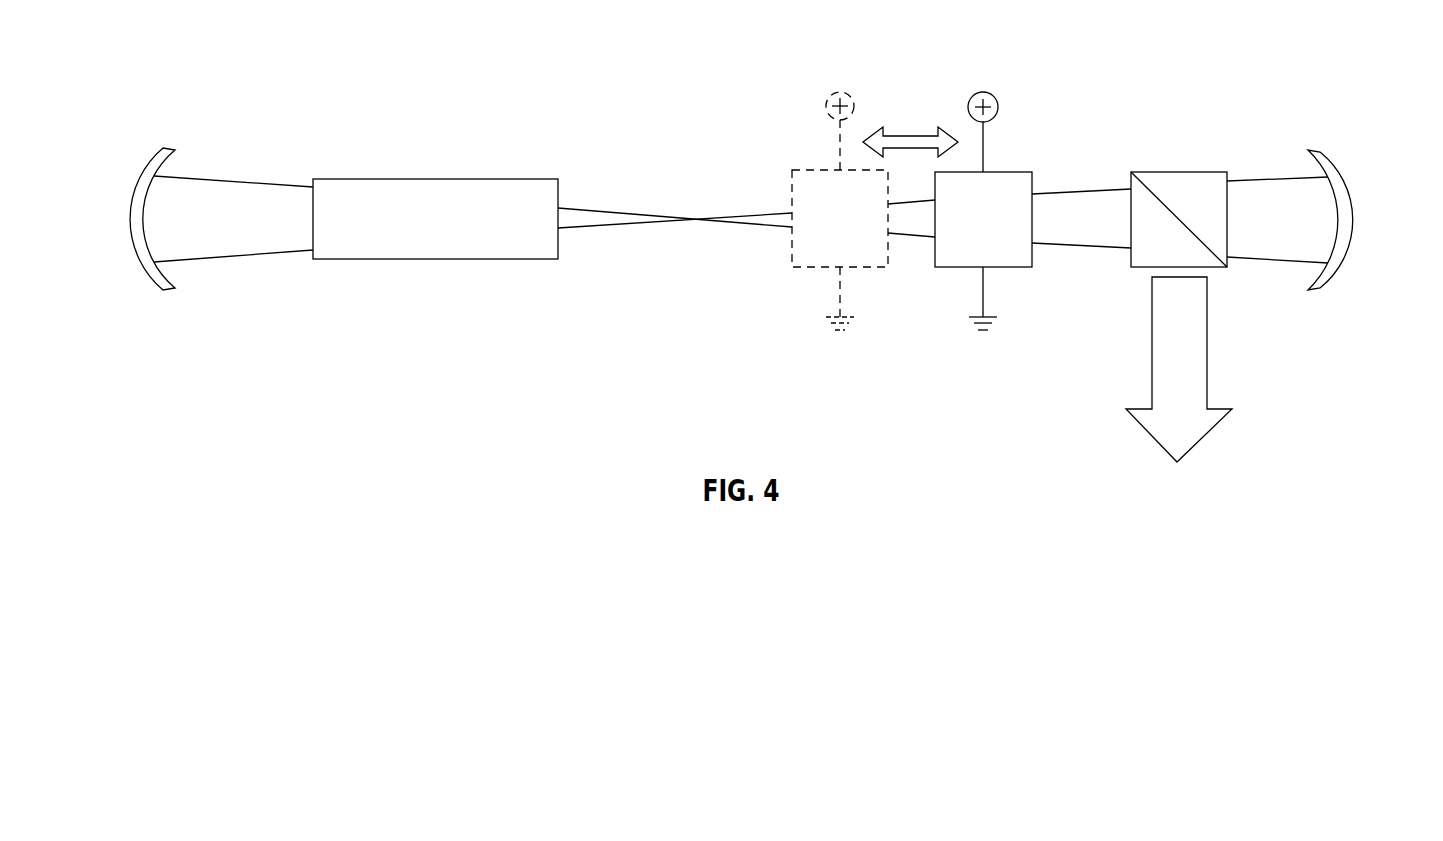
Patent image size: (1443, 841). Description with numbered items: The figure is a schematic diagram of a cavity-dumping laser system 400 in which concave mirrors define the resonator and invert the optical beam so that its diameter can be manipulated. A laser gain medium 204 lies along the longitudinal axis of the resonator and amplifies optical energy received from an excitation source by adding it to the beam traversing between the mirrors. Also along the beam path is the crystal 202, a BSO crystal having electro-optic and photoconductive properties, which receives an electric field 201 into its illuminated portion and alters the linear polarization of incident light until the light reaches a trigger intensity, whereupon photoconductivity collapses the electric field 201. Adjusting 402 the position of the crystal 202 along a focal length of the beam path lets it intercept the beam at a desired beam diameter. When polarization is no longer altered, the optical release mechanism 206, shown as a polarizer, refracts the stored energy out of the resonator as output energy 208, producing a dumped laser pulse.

The cavity-dumping laser system 400 is at (237, 98).
The laser gain medium 204 is at (435, 179).
The adjusting the BSO crystal position 402 is at (912, 133).
The crystal 202 is at (1010, 172).
The electric field 201 is at (995, 98).
The optical release mechanism 206 is at (1138, 267).
The output energy 208 is at (1208, 343).